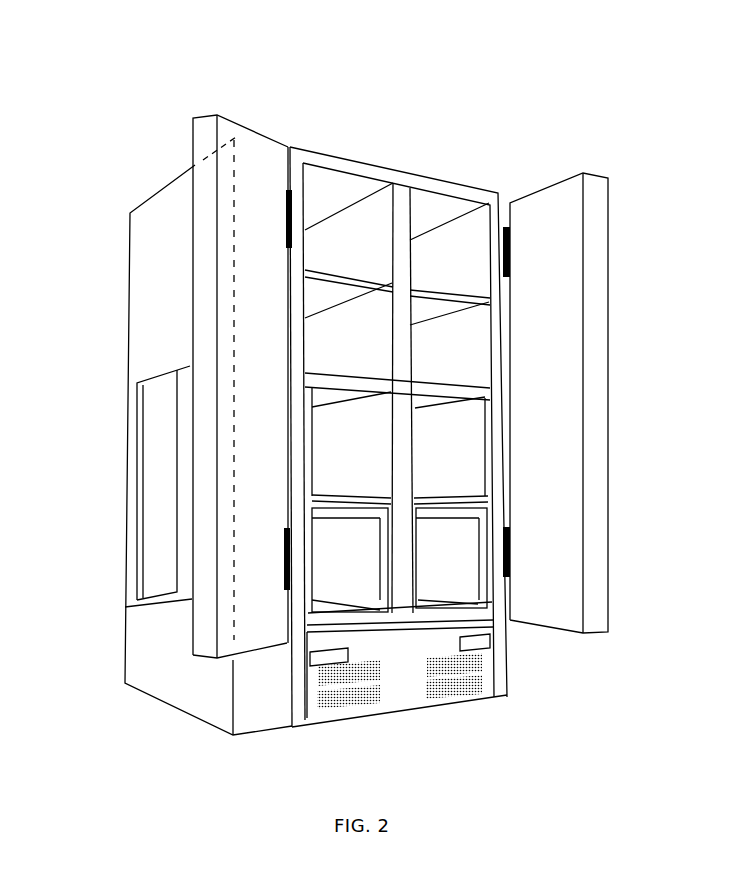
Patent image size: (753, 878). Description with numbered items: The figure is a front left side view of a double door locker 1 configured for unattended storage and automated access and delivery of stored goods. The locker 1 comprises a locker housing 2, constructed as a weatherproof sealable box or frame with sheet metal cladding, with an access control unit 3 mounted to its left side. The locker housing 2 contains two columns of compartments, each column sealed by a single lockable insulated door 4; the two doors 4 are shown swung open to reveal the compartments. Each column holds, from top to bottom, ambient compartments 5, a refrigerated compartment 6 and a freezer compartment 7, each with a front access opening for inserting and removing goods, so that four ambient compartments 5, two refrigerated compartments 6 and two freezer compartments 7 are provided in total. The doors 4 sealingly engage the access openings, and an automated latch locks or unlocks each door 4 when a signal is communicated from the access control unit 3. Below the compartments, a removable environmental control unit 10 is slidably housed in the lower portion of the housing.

The locker 1 is at (367, 94).
The locker housing 2 is at (400, 164).
The access control unit 3 is at (162, 259).
The door 4 is at (203, 126).
The ambient compartment 5 is at (397, 264).
The refrigerated compartment 6 is at (400, 446).
The freezer compartment 7 is at (400, 566).
The base panel with vents 10 is at (407, 670).